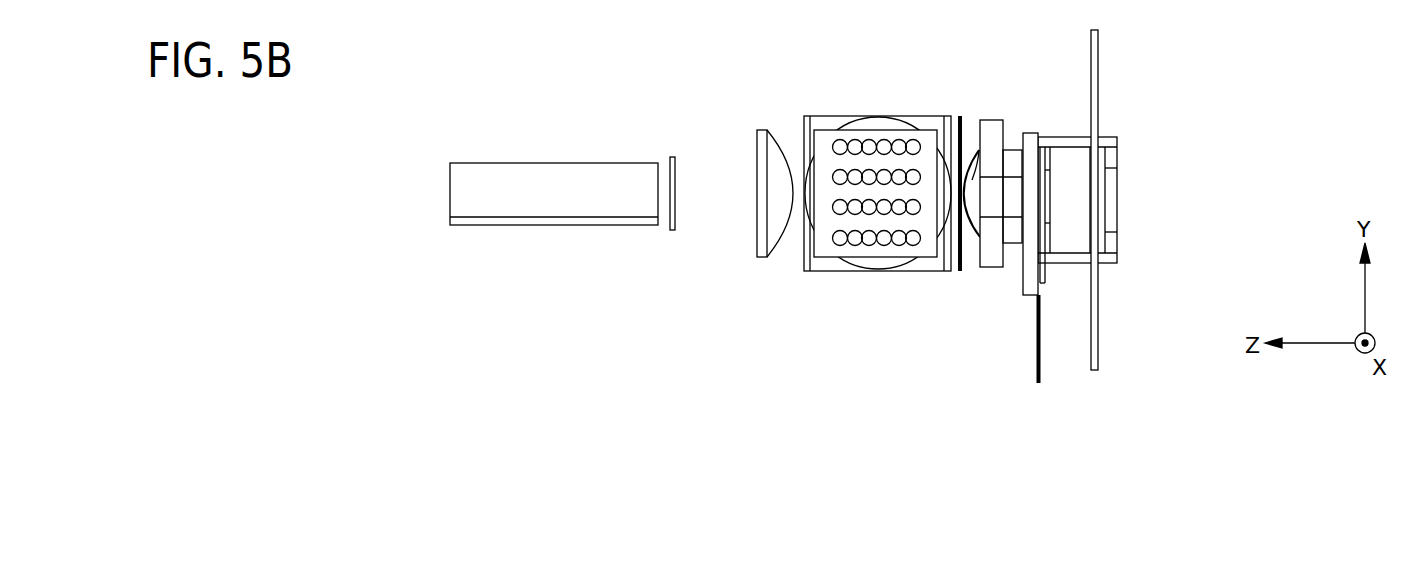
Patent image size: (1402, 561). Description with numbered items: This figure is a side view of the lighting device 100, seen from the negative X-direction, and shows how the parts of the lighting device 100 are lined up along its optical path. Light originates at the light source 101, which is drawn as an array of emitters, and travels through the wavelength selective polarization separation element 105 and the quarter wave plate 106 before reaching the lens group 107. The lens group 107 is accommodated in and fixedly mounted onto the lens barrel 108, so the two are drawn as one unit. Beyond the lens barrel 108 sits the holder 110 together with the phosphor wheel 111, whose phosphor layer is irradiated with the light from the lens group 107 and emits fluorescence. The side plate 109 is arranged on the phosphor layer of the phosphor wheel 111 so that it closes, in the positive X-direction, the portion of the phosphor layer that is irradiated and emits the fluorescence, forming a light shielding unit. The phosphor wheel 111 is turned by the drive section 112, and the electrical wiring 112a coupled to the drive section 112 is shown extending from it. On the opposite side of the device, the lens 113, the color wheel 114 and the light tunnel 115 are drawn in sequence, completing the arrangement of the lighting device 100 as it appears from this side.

The lighting device 100 is at (443, 68).
The light source 101 is at (823, 237).
The wavelength selective polarization separation element 105 is at (842, 116).
The quarter wave plate 106 is at (960, 271).
The lens group 107 is at (979, 150).
The lens barrel 108 is at (1013, 157).
The side plate 109 is at (1110, 148).
The holder 110 is at (1030, 283).
The phosphor wheel 111 is at (1098, 62).
The drive section 112 is at (1070, 208).
The electrical wiring 112a is at (1036, 383).
The lens 113 is at (757, 130).
The color wheel 114 is at (672, 157).
The light tunnel 115 is at (510, 177).